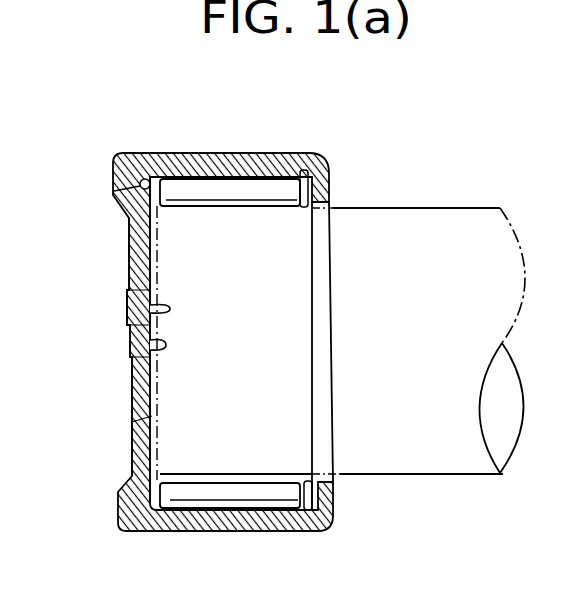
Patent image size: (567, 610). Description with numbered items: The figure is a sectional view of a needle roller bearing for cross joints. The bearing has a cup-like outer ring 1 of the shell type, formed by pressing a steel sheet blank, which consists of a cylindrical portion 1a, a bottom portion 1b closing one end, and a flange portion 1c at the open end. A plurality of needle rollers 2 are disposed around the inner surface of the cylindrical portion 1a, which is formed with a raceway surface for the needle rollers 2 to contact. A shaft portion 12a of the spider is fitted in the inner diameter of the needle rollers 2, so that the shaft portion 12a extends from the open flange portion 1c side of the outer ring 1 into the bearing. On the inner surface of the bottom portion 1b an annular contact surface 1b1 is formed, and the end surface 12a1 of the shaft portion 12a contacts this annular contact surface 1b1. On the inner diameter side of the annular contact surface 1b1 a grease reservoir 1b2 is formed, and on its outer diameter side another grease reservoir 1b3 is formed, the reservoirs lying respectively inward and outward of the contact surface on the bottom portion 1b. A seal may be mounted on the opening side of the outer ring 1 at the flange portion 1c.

The outer ring 1 is at (102, 163).
The cylindrical portion 1a is at (278, 153).
The bottom portion 1b is at (128, 238).
The annular contact surface 1b1 is at (134, 308).
The grease reservoir 1b2 is at (131, 342).
The grease reservoir 1b3 is at (112, 187).
The flange portion 1c is at (328, 181).
The needle rollers 2 is at (230, 218).
The shaft portion 12a is at (455, 208).
The end surface 12a1 is at (132, 427).